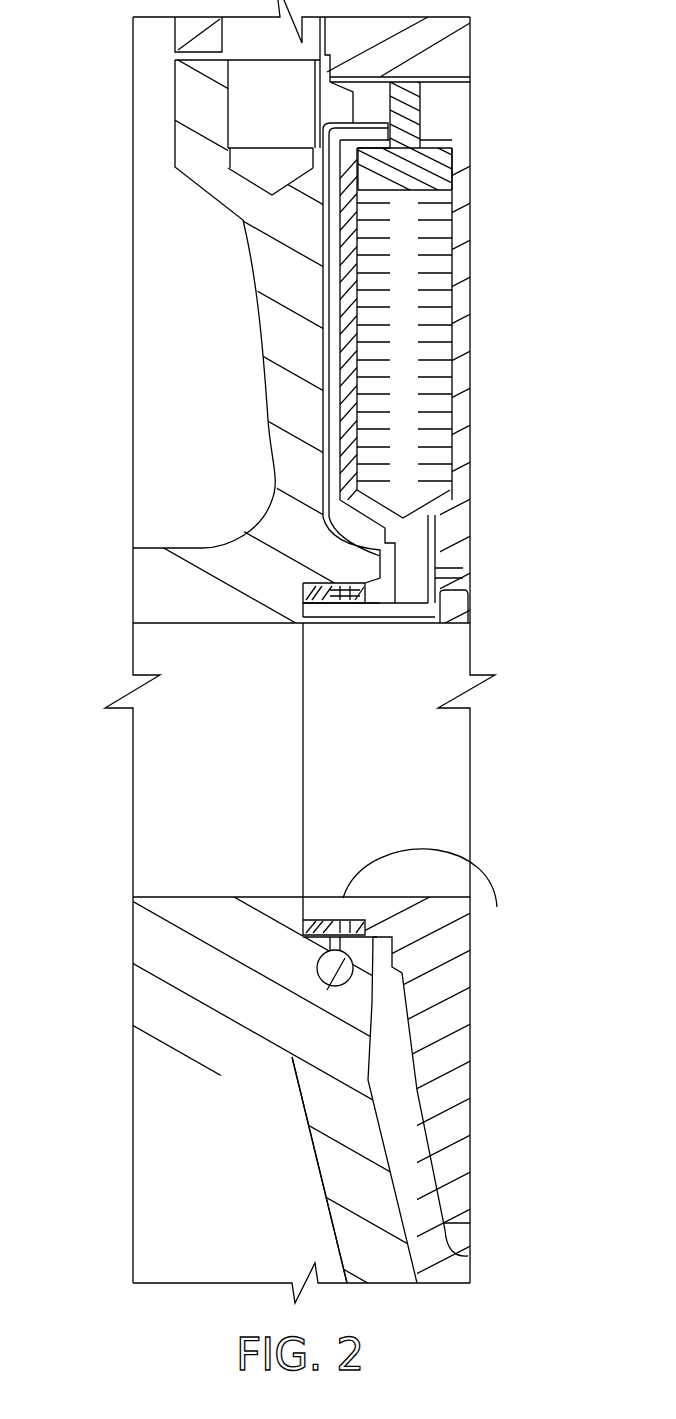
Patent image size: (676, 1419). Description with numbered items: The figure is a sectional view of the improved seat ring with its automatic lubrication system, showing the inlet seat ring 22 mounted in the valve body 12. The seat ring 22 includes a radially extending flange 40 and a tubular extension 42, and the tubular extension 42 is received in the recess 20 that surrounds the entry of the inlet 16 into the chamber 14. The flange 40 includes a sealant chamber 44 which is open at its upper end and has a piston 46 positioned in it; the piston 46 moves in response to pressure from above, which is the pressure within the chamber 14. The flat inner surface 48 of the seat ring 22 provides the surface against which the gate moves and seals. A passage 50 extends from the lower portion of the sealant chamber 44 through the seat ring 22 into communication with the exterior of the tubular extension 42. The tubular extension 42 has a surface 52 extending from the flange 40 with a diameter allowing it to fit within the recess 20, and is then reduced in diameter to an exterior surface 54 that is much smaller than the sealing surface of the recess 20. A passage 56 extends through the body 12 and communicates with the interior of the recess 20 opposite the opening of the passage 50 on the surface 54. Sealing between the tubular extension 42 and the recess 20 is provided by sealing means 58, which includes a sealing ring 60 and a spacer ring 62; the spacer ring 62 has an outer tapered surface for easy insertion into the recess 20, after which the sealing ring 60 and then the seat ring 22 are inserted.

The body 12 is at (302, 1105).
The chamber 14 is at (397, 1125).
The inlet 16 is at (265, 897).
The recess 20 is at (305, 910).
The inlet seat ring 22 is at (470, 1012).
The radially extending flange 40 is at (337, 243).
The tubular extension 42 is at (497, 907).
The sealant chamber 44 is at (404, 342).
The piston 46 is at (397, 192).
The inner surface 48 is at (469, 323).
The passage 50 is at (430, 513).
The surface 52 is at (373, 937).
The exterior surface 54 is at (330, 937).
The passage 56 is at (333, 986).
The sealing means 58 is at (336, 583).
The sealing ring 60 is at (373, 607).
The spacer ring 62 is at (293, 606).